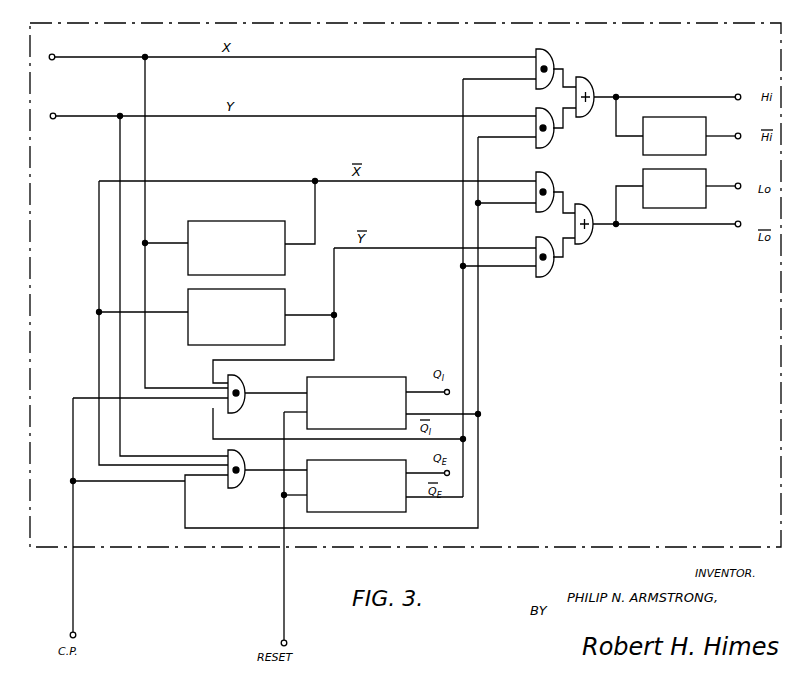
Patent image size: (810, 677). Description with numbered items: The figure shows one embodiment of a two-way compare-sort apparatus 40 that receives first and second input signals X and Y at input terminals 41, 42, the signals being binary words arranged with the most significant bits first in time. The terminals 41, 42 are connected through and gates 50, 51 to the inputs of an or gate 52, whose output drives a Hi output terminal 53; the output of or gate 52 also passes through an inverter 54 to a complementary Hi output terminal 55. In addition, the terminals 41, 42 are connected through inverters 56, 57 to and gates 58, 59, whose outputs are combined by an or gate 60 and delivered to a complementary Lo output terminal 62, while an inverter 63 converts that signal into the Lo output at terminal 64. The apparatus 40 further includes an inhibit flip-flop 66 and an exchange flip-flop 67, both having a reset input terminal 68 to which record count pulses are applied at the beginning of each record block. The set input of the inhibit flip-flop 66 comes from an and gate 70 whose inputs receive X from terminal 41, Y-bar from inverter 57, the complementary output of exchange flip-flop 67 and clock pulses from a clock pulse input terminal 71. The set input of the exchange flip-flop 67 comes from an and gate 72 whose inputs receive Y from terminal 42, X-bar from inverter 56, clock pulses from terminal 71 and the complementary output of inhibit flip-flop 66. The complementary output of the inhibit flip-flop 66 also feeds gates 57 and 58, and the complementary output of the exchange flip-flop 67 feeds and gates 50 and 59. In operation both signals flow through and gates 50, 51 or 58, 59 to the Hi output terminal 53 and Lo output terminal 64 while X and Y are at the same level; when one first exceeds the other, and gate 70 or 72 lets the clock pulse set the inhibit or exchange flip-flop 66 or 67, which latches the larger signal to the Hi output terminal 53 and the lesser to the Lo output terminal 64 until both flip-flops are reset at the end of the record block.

The two-way compare-sort apparatus 40 is at (500, 542).
The input terminal 41 is at (54, 55).
The input terminal 42 is at (55, 114).
The and gate 50 is at (550, 52).
The and gate 51 is at (547, 141).
The or gate 52 is at (592, 83).
The Hi output terminal 53 is at (740, 94).
The inverter 54 is at (693, 127).
The Hi-bar output terminal 55 is at (740, 133).
The inverter 56 is at (264, 226).
The inverter 57 is at (277, 304).
The and gate 58 is at (548, 184).
The and gate 59 is at (548, 277).
The or gate 60 is at (586, 240).
The Lo-bar output terminal 62 is at (748, 214).
The inverter 63 is at (703, 176).
The Lo output terminal 64 is at (740, 183).
The inhibit flip-flop 66 is at (394, 379).
The exchange flip-flop 67 is at (397, 505).
The reset input terminal 68 is at (287, 640).
The and gate 70 is at (246, 386).
The clock pulse input terminal 71 is at (76, 633).
The and gate 72 is at (246, 463).